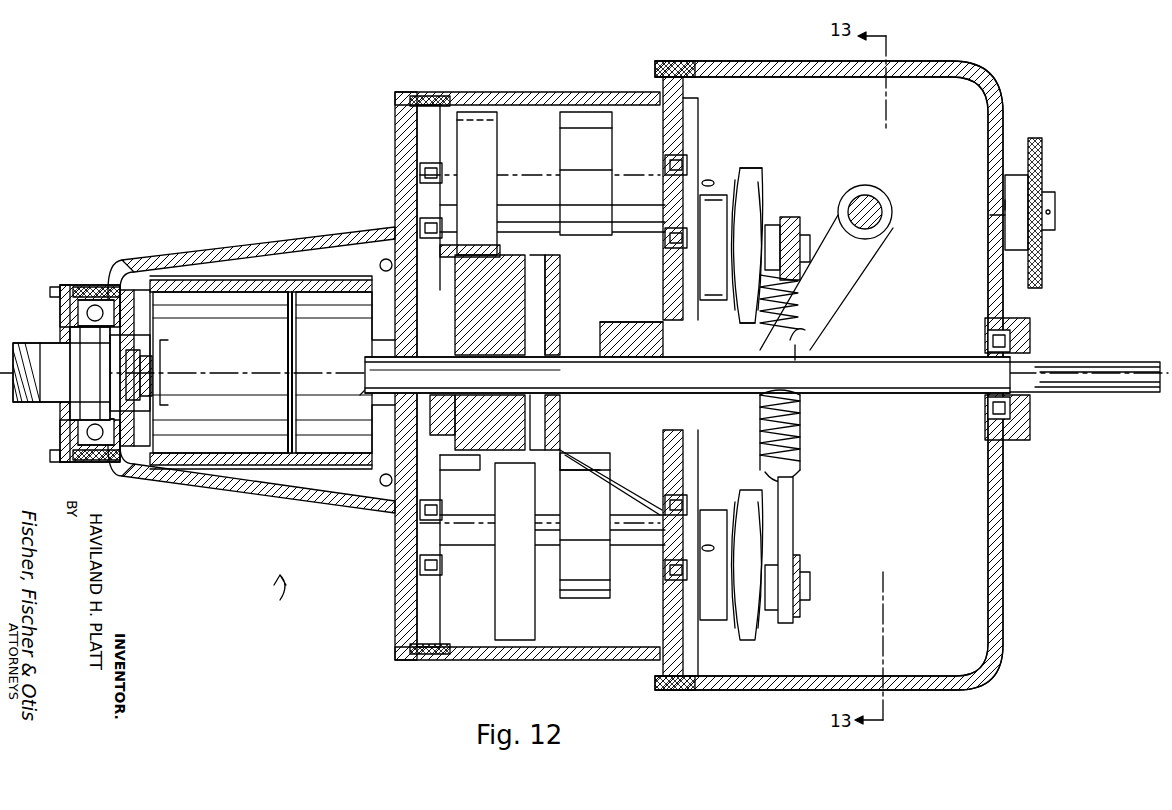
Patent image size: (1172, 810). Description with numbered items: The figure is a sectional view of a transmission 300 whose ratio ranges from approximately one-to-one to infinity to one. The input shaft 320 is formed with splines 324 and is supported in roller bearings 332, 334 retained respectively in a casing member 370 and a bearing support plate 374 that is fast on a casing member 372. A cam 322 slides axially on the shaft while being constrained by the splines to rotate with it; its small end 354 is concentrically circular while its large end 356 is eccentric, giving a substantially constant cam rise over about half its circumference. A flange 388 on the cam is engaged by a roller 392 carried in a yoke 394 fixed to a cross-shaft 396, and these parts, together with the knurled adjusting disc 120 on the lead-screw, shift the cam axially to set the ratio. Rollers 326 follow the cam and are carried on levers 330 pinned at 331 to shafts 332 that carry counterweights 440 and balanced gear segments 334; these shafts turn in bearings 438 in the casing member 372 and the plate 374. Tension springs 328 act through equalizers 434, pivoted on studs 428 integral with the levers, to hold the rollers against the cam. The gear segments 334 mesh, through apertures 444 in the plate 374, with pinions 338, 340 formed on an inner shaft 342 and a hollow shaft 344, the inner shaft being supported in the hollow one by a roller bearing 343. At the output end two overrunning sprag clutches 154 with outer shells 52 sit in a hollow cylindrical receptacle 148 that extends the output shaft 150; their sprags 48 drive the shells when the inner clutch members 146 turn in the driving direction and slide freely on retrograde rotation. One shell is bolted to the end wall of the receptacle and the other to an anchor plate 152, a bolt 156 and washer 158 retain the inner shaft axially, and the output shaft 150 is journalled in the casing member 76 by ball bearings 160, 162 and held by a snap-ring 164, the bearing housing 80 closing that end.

The transmission 300 is at (280, 600).
The casing member 370 is at (1000, 92).
The casing member 372 is at (608, 92).
The pinion 338 is at (545, 300).
The small end of cam 354 is at (612, 328).
The casing member 76 is at (292, 245).
The hollow cylindrical receptacle 148 is at (198, 262).
The bearing housing 80 is at (74, 283).
The ball bearing 160 is at (104, 283).
The snap-ring 164 is at (78, 320).
The output shaft 150 is at (55, 352).
The outer cylindrical shell 52 is at (326, 290).
The overrunning sprag clutch 154 is at (248, 356).
The inner clutch member 146 is at (160, 355).
The washer 158 is at (150, 368).
The bolt 156 is at (144, 384).
The inner shaft 342 is at (375, 380).
The sprags or pawls 48 is at (345, 465).
The ball bearing 162 is at (384, 268).
The splines 324 is at (872, 358).
The input shaft 320 is at (1070, 358).
The roller bearing / shaft 332 is at (497, 178).
The roller bearing / gear segment 334 is at (472, 128).
The counterweight 440 is at (595, 154).
The bearing 438 is at (418, 168).
The hollow shaft 344 is at (460, 357).
The pinion 340 is at (482, 315).
The aperture 444 is at (540, 260).
The bearing support plate 374 is at (550, 282).
The cam 322 is at (652, 455).
The roller bearing 343 is at (455, 430).
The anchor plate 152 is at (440, 468).
The roller 326 is at (760, 182).
The lever 330 is at (722, 175).
The pin 331 is at (708, 180).
The equalizer 434 is at (782, 222).
The pivot stud 428 is at (805, 225).
The yoke 394 is at (845, 268).
The cross-shaft 396 is at (888, 222).
The roller 392 is at (782, 340).
The tension spring 328 is at (805, 430).
The flange 388 is at (808, 405).
The large end of cam 356 is at (808, 470).
The knurled adjusting disc 120 is at (1045, 172).